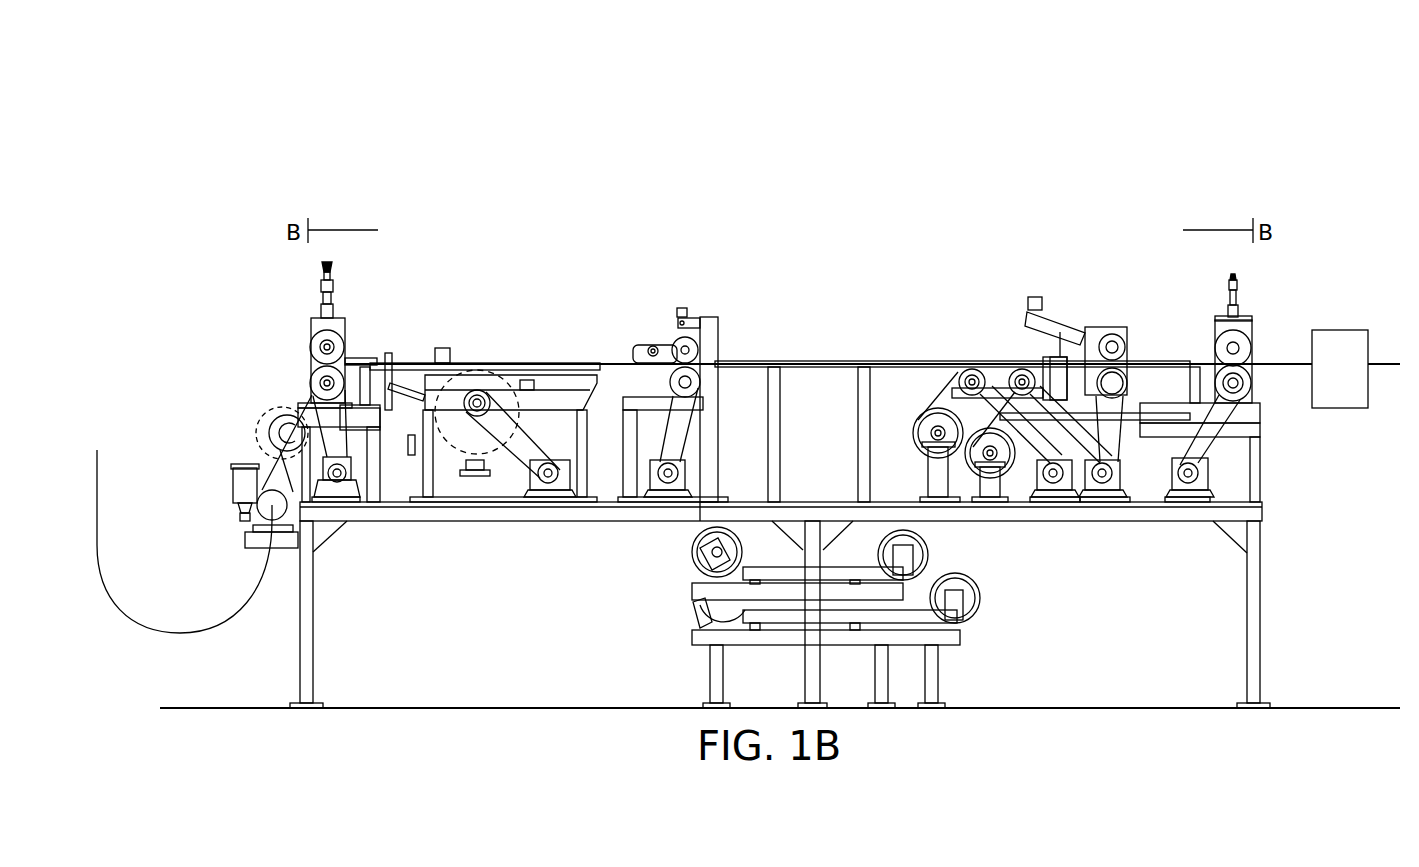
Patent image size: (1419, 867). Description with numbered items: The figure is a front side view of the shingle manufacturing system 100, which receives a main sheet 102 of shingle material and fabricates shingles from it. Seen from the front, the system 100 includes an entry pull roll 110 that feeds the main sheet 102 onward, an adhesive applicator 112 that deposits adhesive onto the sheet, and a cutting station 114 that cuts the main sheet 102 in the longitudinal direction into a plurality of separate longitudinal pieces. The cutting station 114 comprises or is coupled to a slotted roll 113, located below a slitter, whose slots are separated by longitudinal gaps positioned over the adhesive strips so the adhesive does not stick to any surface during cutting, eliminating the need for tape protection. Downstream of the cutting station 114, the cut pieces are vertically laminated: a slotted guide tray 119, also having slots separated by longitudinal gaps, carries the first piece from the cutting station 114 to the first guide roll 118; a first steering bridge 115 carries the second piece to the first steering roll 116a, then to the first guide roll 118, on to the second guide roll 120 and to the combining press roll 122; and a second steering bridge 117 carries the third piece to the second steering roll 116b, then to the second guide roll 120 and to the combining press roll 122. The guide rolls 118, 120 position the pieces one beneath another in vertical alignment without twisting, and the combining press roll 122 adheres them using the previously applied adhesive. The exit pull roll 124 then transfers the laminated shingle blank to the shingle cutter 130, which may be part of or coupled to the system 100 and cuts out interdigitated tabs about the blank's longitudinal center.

The shingle manufacturing system 100 is at (426, 174).
The main sheet 102 is at (168, 633).
The entry pull roll 110 is at (318, 318).
The adhesive applicator 112 is at (445, 455).
The slotted roll 113 is at (702, 382).
The cutting station 114 is at (697, 315).
The first steering bridge 115 is at (690, 550).
The first steering roll 116a is at (912, 437).
The second steering roll 116b is at (1003, 482).
The second steering bridge 117 is at (732, 613).
The first guide roll 118 is at (970, 368).
The slotted guide tray 119 is at (845, 358).
The second guide roll 120 is at (1025, 367).
The combining press roll 122 is at (1077, 315).
The exit pull roll 124 is at (1250, 312).
The shingle cutter 130 is at (1340, 328).